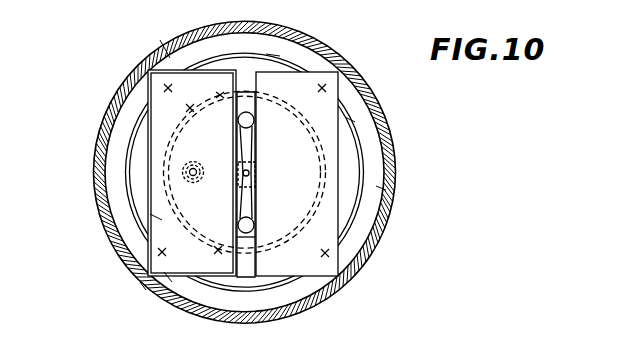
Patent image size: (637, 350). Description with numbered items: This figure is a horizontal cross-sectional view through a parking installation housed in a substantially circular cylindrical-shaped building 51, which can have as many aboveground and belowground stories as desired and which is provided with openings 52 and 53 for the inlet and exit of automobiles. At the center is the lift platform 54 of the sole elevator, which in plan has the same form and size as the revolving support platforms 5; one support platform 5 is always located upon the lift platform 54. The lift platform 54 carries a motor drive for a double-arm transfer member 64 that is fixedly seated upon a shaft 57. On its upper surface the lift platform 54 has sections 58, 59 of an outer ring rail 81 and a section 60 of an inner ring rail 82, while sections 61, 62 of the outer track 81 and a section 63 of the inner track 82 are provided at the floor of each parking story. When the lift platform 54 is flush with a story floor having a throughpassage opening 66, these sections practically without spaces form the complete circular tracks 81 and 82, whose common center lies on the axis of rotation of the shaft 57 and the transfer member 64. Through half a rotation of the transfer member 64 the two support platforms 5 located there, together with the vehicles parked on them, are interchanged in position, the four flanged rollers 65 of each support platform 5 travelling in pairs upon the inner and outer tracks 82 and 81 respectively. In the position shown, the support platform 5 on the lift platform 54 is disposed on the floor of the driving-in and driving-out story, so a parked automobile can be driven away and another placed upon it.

The support platform 5 is at (325, 213).
The building 51 is at (390, 130).
The opening 52 is at (143, 287).
The opening 53 is at (142, 62).
The lift platform 54 is at (162, 217).
The shaft 57 is at (250, 171).
The section of outer ring rail 58 is at (163, 255).
The section of outer ring rail 59 is at (166, 60).
The section of inner ring rail 60 is at (168, 188).
The section of outer ring track 61 is at (128, 163).
The section of outer ring track 62 is at (272, 58).
The section of inner ring track 63 is at (317, 140).
The transfer member 64 is at (248, 202).
The flanged rollers 65 is at (166, 62).
The throughpassage opening 66 is at (150, 132).
The outer ring rail 81 is at (350, 120).
The inner ring rail 82 is at (327, 193).